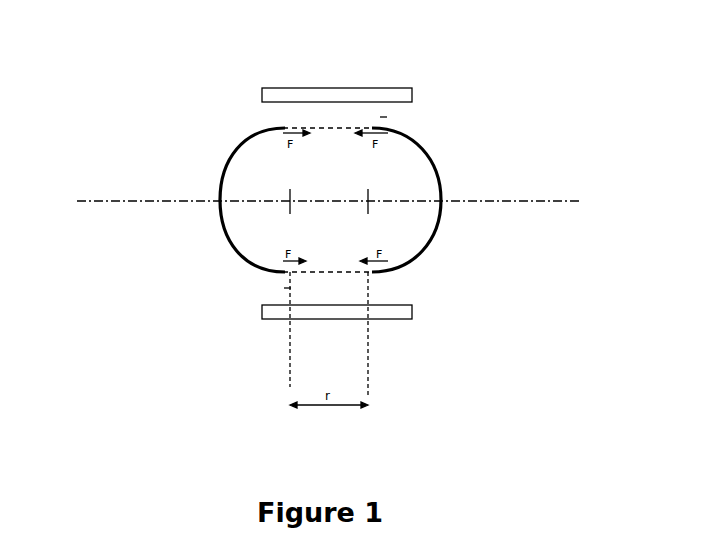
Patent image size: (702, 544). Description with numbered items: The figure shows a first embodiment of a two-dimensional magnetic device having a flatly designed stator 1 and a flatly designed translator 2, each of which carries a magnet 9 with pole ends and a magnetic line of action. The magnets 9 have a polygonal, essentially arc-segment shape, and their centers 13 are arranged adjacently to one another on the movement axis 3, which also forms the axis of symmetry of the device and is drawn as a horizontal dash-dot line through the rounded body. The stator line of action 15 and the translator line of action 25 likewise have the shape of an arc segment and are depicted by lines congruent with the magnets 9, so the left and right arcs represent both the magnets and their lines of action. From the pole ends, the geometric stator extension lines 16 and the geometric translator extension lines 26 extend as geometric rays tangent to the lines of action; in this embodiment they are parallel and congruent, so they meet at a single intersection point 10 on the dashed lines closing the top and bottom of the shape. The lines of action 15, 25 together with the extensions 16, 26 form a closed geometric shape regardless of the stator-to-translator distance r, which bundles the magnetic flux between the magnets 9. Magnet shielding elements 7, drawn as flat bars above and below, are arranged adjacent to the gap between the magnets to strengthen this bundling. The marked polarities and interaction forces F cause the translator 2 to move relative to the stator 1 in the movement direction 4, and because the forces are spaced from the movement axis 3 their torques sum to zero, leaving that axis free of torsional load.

The stator 1 is at (313, 180).
The translator 2 is at (452, 108).
The movement axis 3 is at (97, 203).
The movement direction 4 is at (577, 238).
The magnet shielding element 7 is at (335, 95).
The magnets 9 is at (313, 218).
The intersection point 10 is at (338, 130).
The centers 13 is at (319, 291).
The stator line of action 15 is at (226, 168).
The geometric stator extension line 16 is at (309, 127).
The translator line of action 25 is at (429, 248).
The geometric translator extension line 26 is at (356, 126).